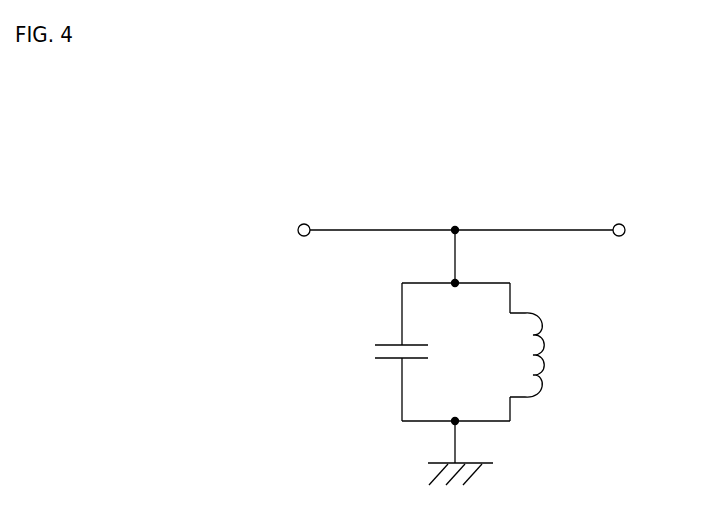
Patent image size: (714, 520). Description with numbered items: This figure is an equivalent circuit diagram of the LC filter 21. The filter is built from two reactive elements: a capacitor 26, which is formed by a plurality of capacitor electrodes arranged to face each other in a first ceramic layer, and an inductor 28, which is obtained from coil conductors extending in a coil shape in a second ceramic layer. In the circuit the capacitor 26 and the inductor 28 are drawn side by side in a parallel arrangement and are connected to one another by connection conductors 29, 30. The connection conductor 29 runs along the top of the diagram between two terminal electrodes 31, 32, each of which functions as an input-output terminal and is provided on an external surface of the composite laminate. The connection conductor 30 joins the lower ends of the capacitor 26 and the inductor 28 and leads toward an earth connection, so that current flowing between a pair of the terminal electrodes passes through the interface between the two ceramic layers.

The LC filter 21 is at (415, 160).
The capacitor 26 is at (378, 352).
The inductor 28 is at (538, 354).
The connection conductor 29 is at (512, 229).
The connection conductor 30 is at (485, 424).
The terminal electrode 31 is at (304, 224).
The terminal electrode 32 is at (622, 225).